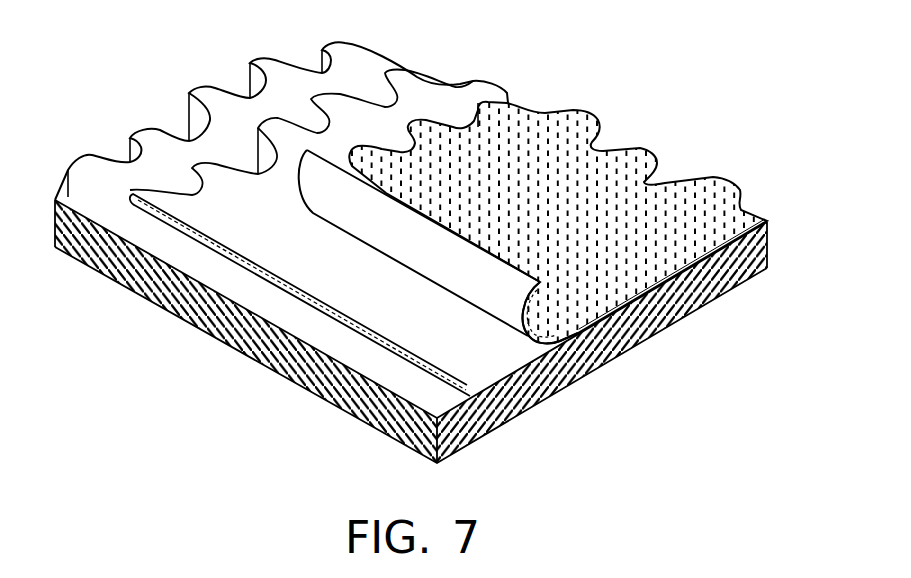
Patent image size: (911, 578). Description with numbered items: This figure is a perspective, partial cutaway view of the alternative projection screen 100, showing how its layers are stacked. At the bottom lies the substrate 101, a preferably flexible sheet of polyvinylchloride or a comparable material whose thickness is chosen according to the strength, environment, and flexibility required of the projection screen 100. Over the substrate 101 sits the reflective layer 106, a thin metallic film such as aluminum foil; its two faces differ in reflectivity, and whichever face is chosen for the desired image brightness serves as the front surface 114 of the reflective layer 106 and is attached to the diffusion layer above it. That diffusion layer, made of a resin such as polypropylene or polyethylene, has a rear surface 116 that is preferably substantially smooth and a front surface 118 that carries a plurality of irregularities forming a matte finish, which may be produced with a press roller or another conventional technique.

The projection screen 100 is at (786, 56).
The substrate 101 is at (613, 360).
The reflective layer 106 is at (445, 440).
The front surface of the reflective layer 114 is at (360, 308).
The rear surface of the diffusion layer 116 is at (360, 207).
The front surface of the diffusion layer 118 is at (707, 223).